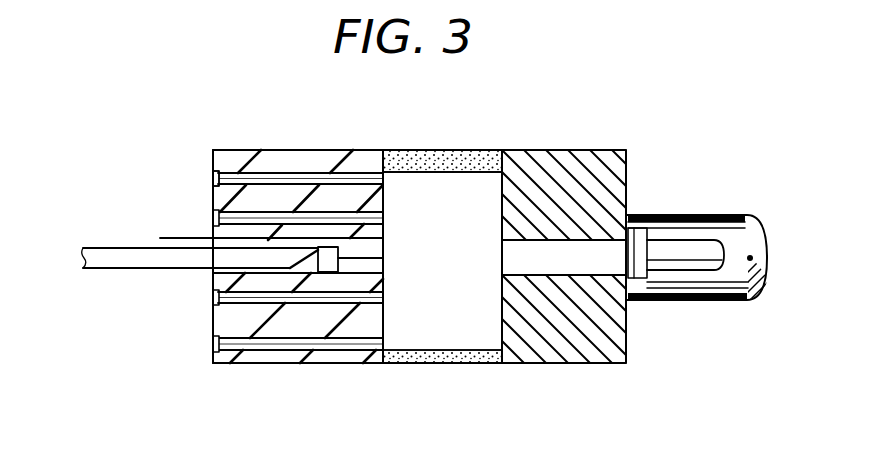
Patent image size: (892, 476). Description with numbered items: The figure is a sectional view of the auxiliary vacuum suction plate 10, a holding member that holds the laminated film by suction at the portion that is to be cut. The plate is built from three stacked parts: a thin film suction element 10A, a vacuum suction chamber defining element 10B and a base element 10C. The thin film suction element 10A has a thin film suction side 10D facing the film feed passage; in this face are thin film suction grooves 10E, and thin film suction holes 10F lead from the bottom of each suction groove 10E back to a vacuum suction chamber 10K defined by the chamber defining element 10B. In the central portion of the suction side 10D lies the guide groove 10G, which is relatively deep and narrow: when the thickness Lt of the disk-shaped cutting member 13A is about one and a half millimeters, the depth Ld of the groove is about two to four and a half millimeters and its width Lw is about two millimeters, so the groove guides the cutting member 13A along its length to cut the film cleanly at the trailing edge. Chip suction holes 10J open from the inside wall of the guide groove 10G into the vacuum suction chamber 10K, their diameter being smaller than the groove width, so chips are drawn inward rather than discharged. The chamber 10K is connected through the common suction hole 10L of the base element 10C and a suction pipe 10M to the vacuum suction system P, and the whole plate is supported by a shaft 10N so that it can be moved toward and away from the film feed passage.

The auxiliary vacuum suction plate 10 is at (300, 150).
The thin film suction element 10A is at (322, 363).
The vacuum suction chamber defining element 10B is at (452, 364).
The base element 10C is at (566, 364).
The thin film suction side 10D is at (213, 162).
The thin film suction grooves 10E is at (213, 177).
The thin film suction holes 10F is at (215, 197).
The guide groove 10G is at (248, 268).
The chip suction holes 10J is at (383, 258).
The vacuum suction chamber 10K is at (440, 176).
The common suction hole 10L is at (560, 250).
The suction pipe 10M is at (667, 250).
The shaft 10N is at (725, 218).
The cutting member 13A is at (98, 254).
The vacuum suction system P is at (752, 258).
The thickness of the cutting member Lt is at (108, 217).
The depth of the guide groove Ld is at (213, 245).
The width of the guide groove Lw is at (188, 250).